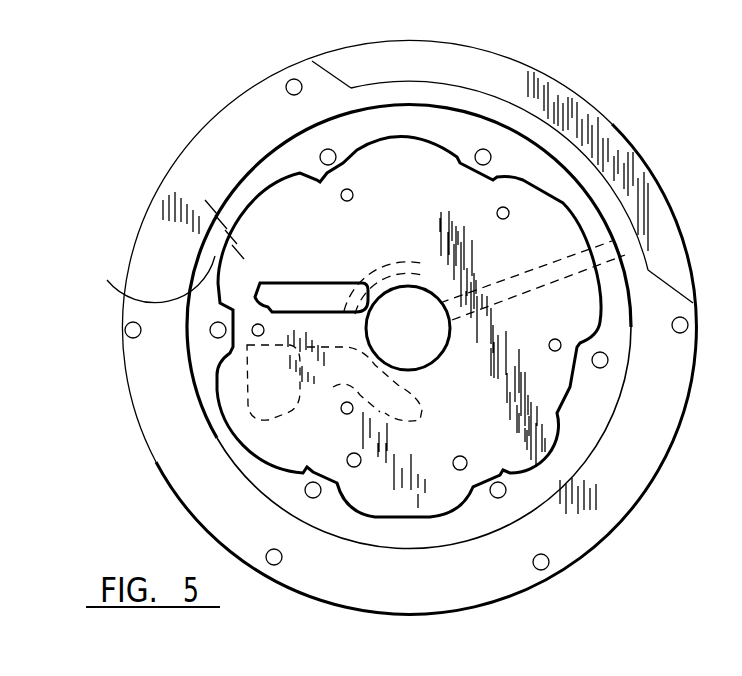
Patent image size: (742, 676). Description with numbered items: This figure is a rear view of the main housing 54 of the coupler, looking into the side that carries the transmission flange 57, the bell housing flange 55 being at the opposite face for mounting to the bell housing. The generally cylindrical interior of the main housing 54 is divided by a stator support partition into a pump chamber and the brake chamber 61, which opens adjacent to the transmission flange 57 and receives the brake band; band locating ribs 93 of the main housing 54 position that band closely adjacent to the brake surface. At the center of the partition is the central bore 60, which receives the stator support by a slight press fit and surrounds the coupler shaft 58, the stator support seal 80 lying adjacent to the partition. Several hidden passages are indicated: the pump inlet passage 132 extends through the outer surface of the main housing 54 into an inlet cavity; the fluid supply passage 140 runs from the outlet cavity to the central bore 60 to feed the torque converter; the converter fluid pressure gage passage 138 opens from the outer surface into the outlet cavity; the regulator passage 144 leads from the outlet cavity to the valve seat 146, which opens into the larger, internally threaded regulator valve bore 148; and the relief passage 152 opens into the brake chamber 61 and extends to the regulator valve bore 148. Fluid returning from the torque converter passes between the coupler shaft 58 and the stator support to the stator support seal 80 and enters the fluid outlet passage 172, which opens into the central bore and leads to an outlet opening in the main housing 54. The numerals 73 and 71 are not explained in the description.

The transmission flange 57 is at (217, 113).
The main housing 54 is at (567, 140).
The bell housing flange 55 is at (630, 141).
The central bore 60 is at (434, 290).
The fluid outlet passage 172 is at (600, 257).
The converter fluid pressure gage passage 138 is at (247, 272).
The fluid supply passage 140 is at (347, 308).
The regulator passage 144 is at (317, 277).
The valve seat 146 is at (283, 277).
The regulator valve bore 148 is at (238, 270).
The relief passage 152 is at (117, 287).
The pump inlet passage 132 is at (262, 405).
The band locating ribs 93 is at (490, 156).
The brake chamber 61 is at (430, 505).
The seal 73 is at (314, 6).
The bearing 71 is at (454, 6).
The stator support seal 80 is at (538, 6).
The coupler shaft 58 is at (644, 6).